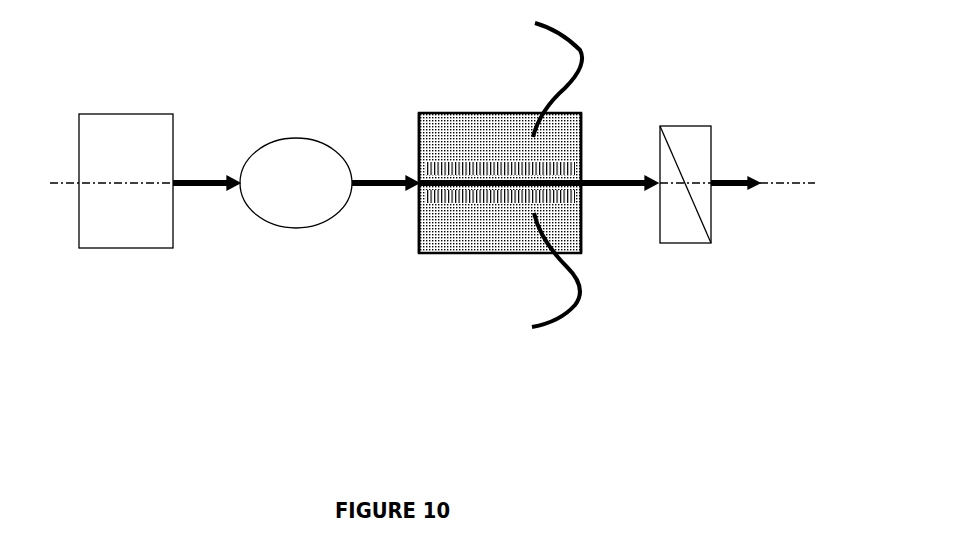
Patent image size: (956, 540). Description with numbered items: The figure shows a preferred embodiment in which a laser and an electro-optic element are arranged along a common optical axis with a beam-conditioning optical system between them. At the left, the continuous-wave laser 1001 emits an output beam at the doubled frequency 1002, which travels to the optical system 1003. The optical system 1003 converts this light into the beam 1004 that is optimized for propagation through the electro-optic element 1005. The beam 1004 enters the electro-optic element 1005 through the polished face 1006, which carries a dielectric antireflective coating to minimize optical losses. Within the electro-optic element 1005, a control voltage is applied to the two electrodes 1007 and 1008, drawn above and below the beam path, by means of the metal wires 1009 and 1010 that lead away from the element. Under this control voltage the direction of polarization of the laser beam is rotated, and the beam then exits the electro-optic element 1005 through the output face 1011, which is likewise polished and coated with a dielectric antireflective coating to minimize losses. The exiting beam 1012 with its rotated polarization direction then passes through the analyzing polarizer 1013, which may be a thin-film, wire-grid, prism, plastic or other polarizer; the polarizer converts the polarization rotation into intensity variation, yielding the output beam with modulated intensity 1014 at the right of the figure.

The continuous-wave laser 1001 is at (138, 123).
The output beam at the doubled frequency 1002 is at (215, 199).
The optical system 1003 is at (280, 146).
The beam optimized for propagation 1004 is at (398, 198).
The electro-optic element 1005 is at (503, 206).
The polished face 1006 is at (412, 130).
The electrode 1007 is at (487, 239).
The electrode 1008 is at (461, 120).
The metal wire 1009 is at (595, 46).
The metal wire 1010 is at (597, 294).
The output face 1011 is at (594, 122).
The output light beam 1012 is at (614, 170).
The analyzing polarizer 1013 is at (723, 134).
The output beam with modulated intensity 1014 is at (740, 200).